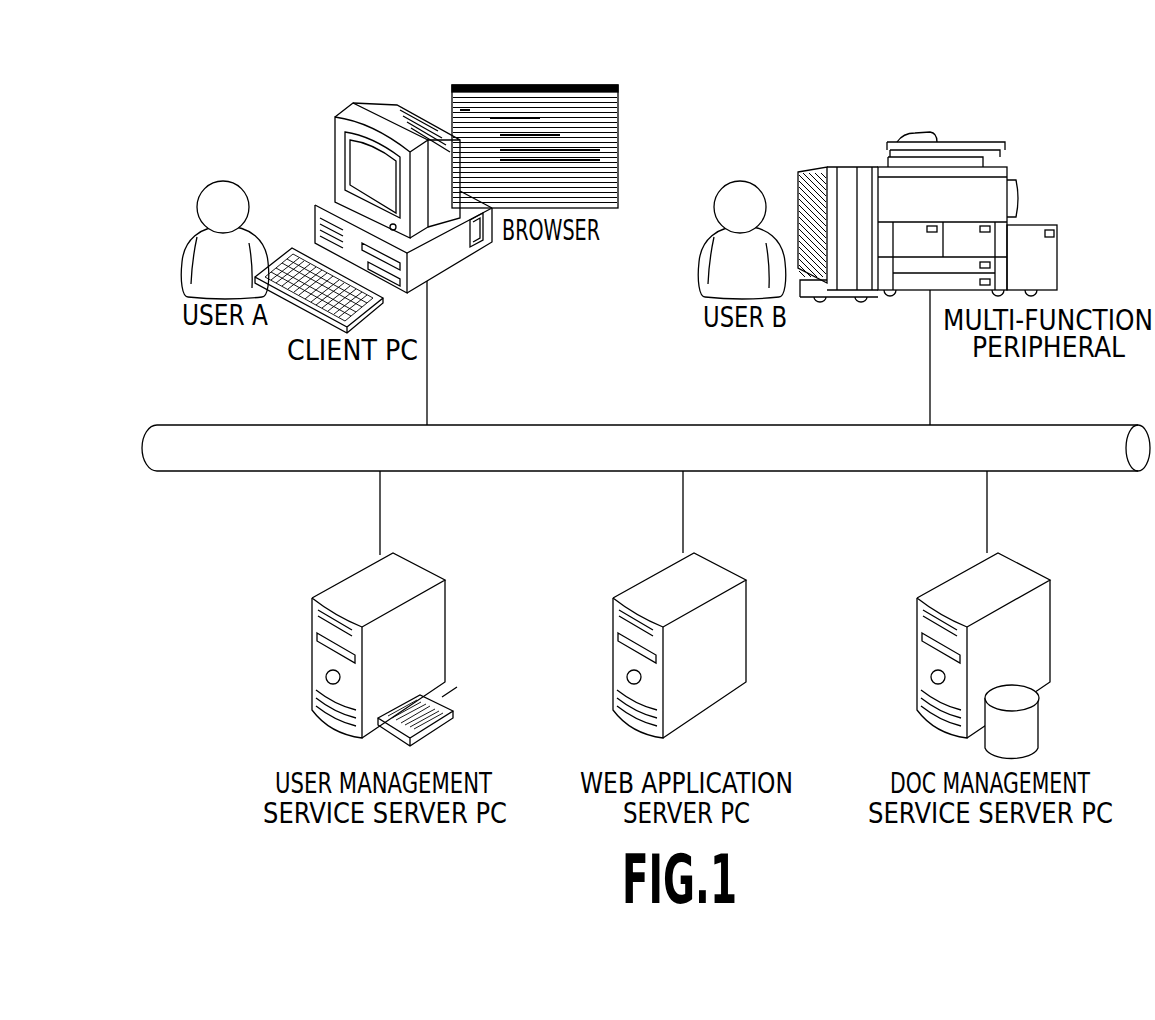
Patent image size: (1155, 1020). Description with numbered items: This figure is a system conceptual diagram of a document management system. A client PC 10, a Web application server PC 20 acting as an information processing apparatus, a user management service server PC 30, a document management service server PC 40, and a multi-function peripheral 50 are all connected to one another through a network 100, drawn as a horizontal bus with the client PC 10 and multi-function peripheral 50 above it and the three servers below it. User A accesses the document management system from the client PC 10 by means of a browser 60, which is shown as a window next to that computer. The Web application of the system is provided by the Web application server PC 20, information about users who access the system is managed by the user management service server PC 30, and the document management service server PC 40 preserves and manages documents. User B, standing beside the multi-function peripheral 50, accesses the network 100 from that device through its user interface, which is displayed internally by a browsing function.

The client PC 10 is at (363, 116).
The Web application server PC 20 is at (649, 597).
The user management service server PC 30 is at (350, 597).
The document management service server PC 40 is at (951, 597).
The multi-function peripheral 50 is at (955, 138).
The browser 60 is at (567, 85).
The network 100 is at (830, 472).